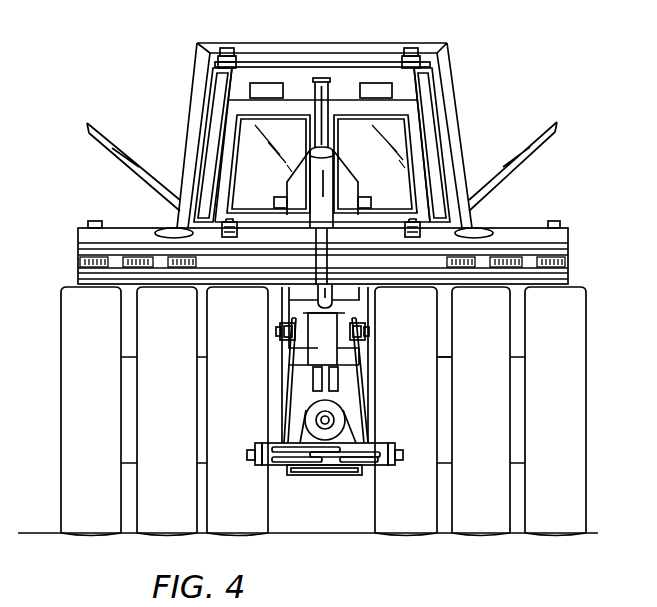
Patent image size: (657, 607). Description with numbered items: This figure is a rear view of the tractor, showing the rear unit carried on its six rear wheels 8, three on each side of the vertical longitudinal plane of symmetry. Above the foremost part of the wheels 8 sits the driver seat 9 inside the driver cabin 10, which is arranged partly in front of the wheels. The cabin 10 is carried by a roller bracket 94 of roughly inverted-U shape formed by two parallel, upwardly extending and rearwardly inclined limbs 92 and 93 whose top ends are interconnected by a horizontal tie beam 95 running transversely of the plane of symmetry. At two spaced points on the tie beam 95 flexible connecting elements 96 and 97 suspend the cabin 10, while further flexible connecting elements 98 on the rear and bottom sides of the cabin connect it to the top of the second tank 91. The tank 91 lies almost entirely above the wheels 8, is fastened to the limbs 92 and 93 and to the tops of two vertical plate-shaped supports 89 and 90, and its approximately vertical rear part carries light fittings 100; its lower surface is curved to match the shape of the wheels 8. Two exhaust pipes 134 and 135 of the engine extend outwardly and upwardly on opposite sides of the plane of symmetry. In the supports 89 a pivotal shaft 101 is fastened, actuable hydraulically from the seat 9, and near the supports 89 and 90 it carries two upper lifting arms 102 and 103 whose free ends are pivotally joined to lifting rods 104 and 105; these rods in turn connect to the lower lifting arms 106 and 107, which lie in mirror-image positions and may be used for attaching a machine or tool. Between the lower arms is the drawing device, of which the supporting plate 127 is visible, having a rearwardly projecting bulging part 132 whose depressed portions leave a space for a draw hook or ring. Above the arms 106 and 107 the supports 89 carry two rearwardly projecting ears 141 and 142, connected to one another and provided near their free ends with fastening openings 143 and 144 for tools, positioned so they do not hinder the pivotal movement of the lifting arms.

The rear wheels 8 is at (73, 322).
The driver seat 9 is at (344, 172).
The driver cabin 10 is at (433, 102).
The plate-shaped support 89 is at (238, 290).
The plate-shaped support 90 is at (425, 295).
The second tank 91 is at (571, 225).
The limb 92 is at (192, 93).
The limb 93 is at (455, 118).
The roller bracket 94 is at (328, 32).
The tie beam 95 is at (352, 50).
The flexible connecting element 96 is at (227, 44).
The flexible connecting element 97 is at (417, 46).
The flexible connecting elements 98 is at (238, 227).
The light fittings 100 is at (82, 259).
The pivotal shaft 101 is at (290, 330).
The upper lifting arm 102 is at (287, 315).
The upper lifting arm 103 is at (357, 320).
The lifting rod 104 is at (290, 378).
The lifting rod 105 is at (367, 390).
The lower lifting arm 106 is at (261, 425).
The lower lifting arm 107 is at (418, 424).
The supporting plate 127 is at (382, 464).
The bulging part 132 is at (325, 466).
The exhaust pipe 134 is at (97, 141).
The exhaust pipe 135 is at (552, 136).
The ear 141 is at (290, 350).
The ear 142 is at (340, 350).
The fastening opening 143 is at (260, 404).
The fastening opening 144 is at (442, 391).